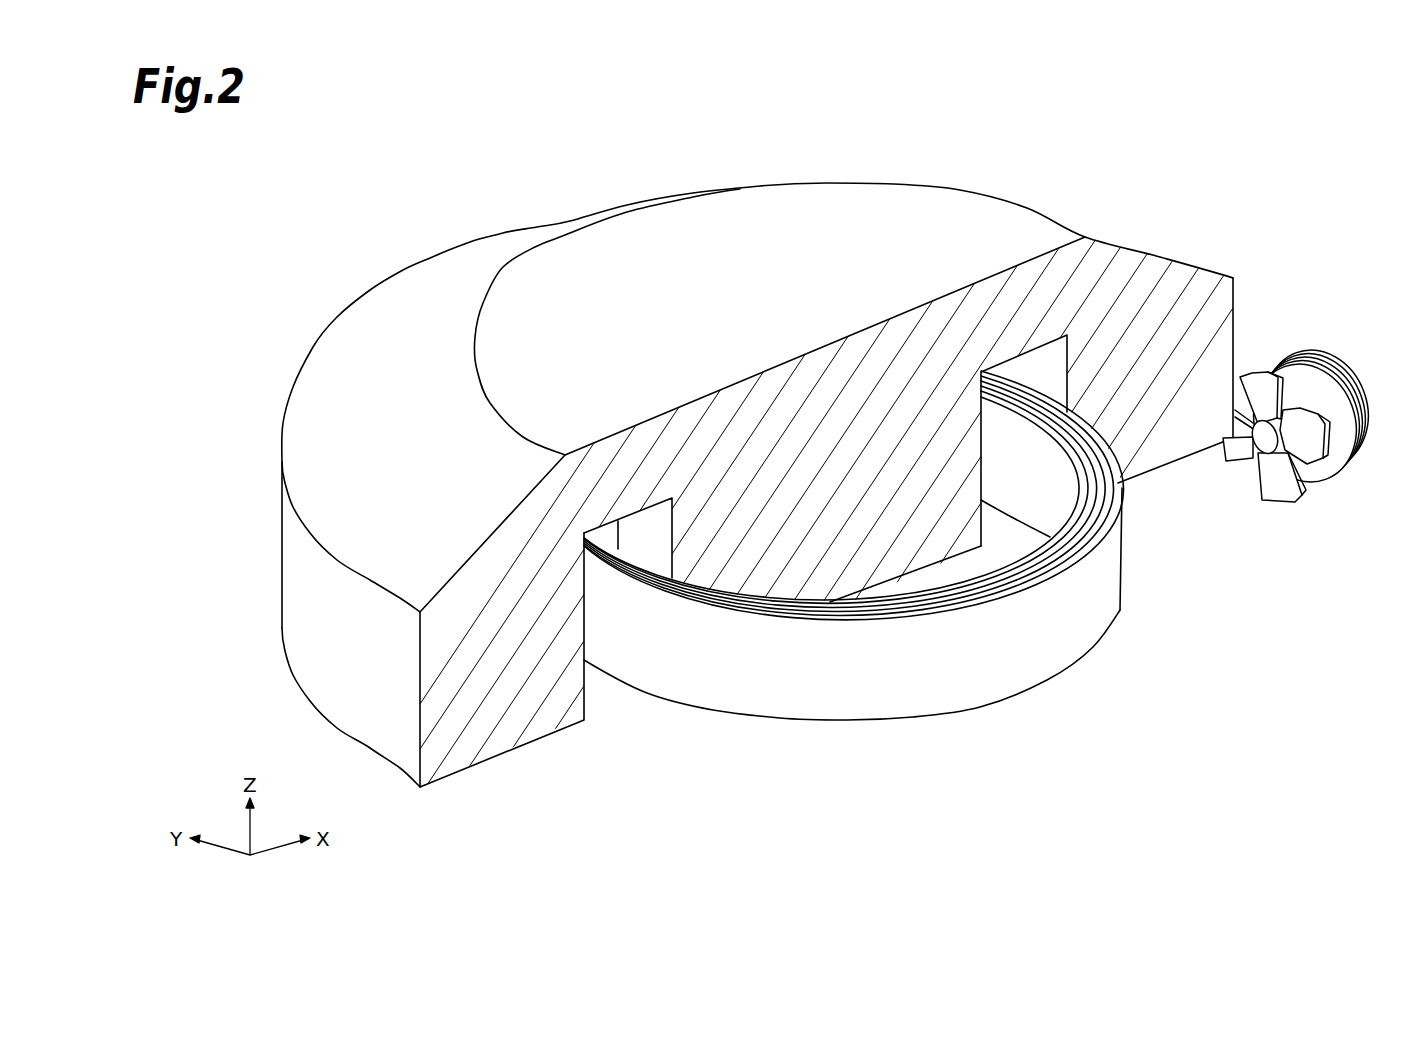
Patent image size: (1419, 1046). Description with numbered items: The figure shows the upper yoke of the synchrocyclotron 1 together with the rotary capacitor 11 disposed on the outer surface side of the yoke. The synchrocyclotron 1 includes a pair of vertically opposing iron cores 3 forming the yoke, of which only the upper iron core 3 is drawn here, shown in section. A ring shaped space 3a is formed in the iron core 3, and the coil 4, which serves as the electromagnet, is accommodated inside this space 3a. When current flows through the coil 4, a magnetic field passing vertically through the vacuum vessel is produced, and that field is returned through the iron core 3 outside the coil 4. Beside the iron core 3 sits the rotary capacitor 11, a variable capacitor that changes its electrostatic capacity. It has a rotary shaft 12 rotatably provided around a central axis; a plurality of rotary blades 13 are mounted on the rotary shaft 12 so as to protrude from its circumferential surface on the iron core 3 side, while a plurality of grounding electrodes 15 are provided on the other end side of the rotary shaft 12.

The synchrocyclotron 1 is at (346, 216).
The iron core 3 is at (1178, 287).
The ring shaped space 3a is at (1050, 362).
The coil 4 is at (1093, 595).
The rotary capacitor 11 is at (1318, 330).
The rotary shaft 12 is at (1267, 443).
The rotary blades 13 is at (1300, 450).
The grounding electrodes 15 is at (1353, 412).